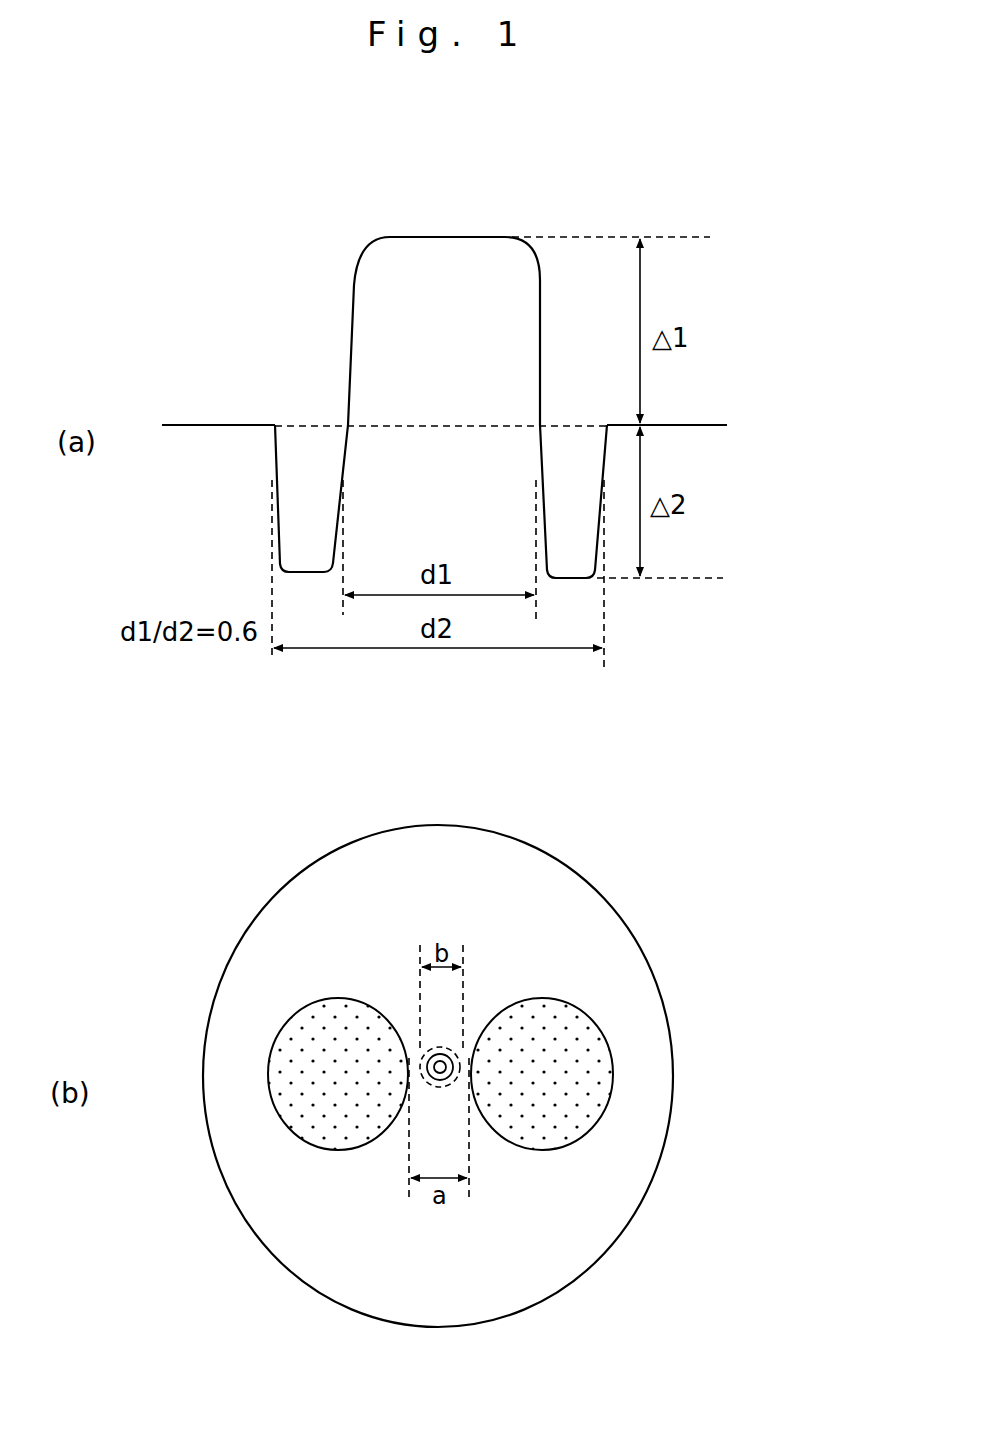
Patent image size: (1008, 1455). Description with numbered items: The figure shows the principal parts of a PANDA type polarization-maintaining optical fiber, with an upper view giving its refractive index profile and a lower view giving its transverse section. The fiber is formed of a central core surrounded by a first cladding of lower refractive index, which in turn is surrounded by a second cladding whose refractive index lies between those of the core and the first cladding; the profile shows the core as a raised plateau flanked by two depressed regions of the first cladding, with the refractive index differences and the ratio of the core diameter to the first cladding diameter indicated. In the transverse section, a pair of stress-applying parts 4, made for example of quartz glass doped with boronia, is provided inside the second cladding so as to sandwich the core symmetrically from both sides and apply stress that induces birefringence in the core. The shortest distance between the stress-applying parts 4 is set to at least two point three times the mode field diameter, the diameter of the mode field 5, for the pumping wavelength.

The stress-applying parts 4 is at (283, 1095).
The mode field 5 is at (427, 1053).